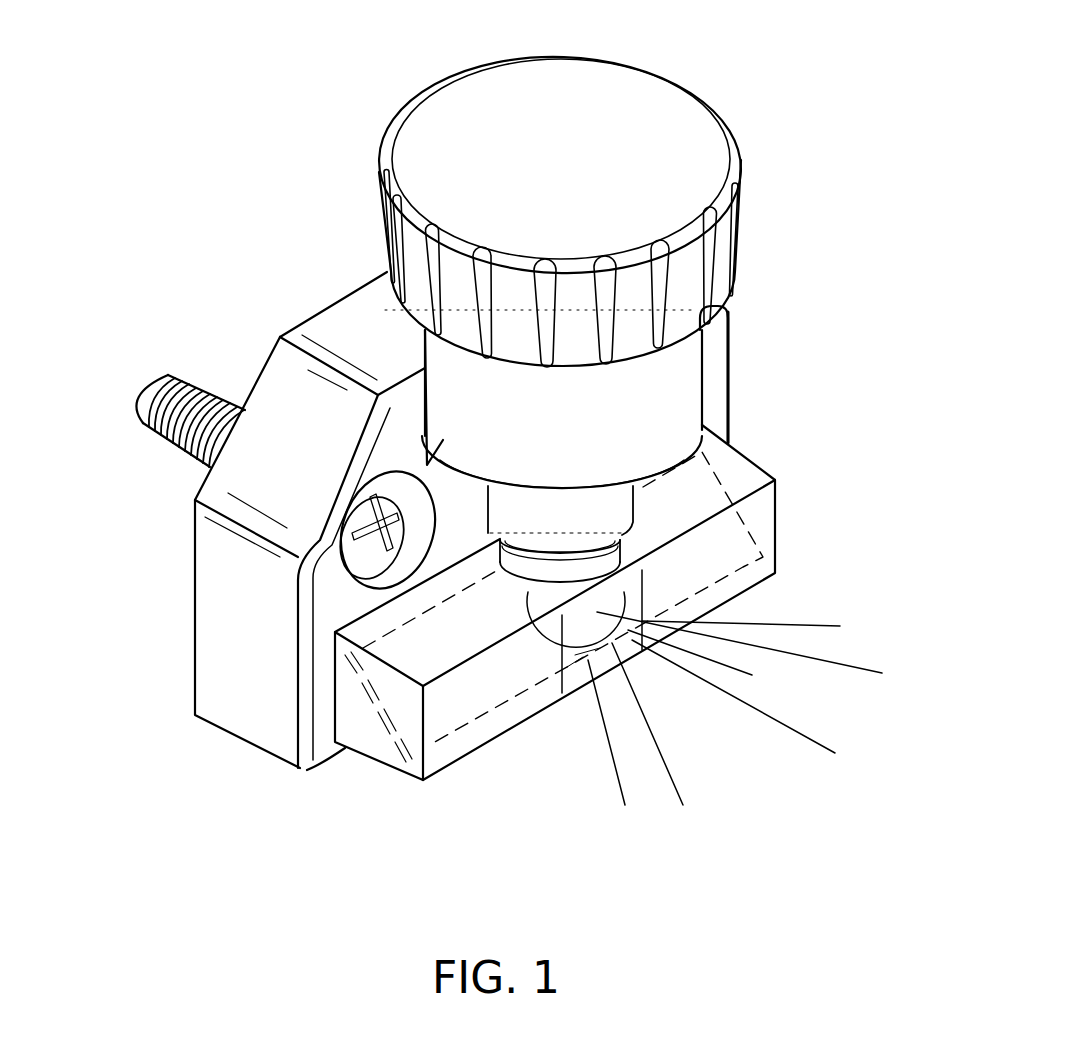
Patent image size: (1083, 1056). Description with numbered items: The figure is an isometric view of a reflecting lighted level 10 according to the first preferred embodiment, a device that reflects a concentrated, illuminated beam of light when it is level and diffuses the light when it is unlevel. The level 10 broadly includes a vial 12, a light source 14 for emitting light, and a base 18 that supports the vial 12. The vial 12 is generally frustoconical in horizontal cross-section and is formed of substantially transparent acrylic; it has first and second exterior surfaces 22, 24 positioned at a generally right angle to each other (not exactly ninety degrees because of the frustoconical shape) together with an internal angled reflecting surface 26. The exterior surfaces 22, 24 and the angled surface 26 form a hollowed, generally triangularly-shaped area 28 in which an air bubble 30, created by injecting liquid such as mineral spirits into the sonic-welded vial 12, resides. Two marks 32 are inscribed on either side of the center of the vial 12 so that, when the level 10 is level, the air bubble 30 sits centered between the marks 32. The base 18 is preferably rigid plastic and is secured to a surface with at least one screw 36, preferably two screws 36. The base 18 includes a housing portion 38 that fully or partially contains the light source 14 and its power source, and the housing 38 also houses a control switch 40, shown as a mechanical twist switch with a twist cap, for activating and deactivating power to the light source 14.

The reflecting lighted level 10 is at (167, 190).
The vial 12 is at (368, 788).
The light source 14 is at (637, 553).
The base 18 is at (177, 632).
The first exterior surface 22 is at (380, 598).
The second exterior surface 24 is at (480, 752).
The internal angled reflecting surface 26 is at (722, 480).
The hollowed generally triangularly-shaped area 28 is at (400, 691).
The air bubble 30 is at (647, 638).
The marks 32 is at (775, 573).
The screw 36 is at (362, 517).
The housing portion 38 is at (683, 383).
The control switch 40 is at (618, 85).